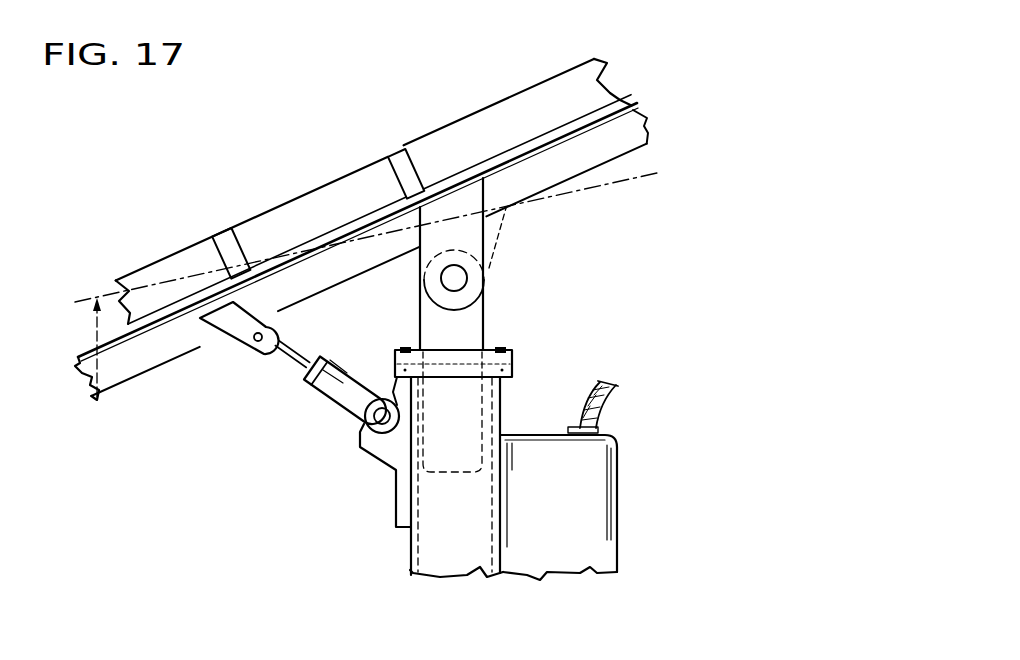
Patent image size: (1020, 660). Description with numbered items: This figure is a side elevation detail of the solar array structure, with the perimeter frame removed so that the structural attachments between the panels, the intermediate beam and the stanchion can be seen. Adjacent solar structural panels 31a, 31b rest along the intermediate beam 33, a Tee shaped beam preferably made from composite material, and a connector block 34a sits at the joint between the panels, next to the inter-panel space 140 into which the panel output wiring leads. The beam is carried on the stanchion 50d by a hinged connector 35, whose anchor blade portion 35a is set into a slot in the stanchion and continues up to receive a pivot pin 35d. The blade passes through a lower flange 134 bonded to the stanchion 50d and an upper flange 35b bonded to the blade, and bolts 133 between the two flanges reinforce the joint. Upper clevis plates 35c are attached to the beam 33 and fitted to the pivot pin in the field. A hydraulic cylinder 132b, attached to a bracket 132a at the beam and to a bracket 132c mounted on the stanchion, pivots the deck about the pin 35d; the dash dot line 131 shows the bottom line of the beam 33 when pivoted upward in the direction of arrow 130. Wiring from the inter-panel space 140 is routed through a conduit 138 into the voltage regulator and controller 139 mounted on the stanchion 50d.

The first rafter segment 31a is at (332, 203).
The second rafter segment 31b is at (513, 112).
The intermediate beam 33 is at (610, 133).
The rafter joint block 34a is at (389, 155).
The hinged connector 35 is at (486, 325).
The anchor blade portion 35a is at (441, 433).
The upper flange 35b is at (395, 351).
The upper clevis plates 35c is at (460, 233).
The pivot pin 35d is at (455, 277).
The stanchion 50d is at (430, 528).
The arrow 130 is at (107, 403).
The dash dot line 131 is at (93, 299).
The bracket 132a is at (230, 327).
The hydraulic cylinder 132b is at (320, 398).
The bracket 132c is at (398, 495).
The bolts 133 is at (507, 350).
The lower flange 134 is at (513, 368).
The conduit 138 is at (596, 405).
The voltage regulator and controller 139 is at (577, 502).
The inter-panel space 140 is at (212, 240).